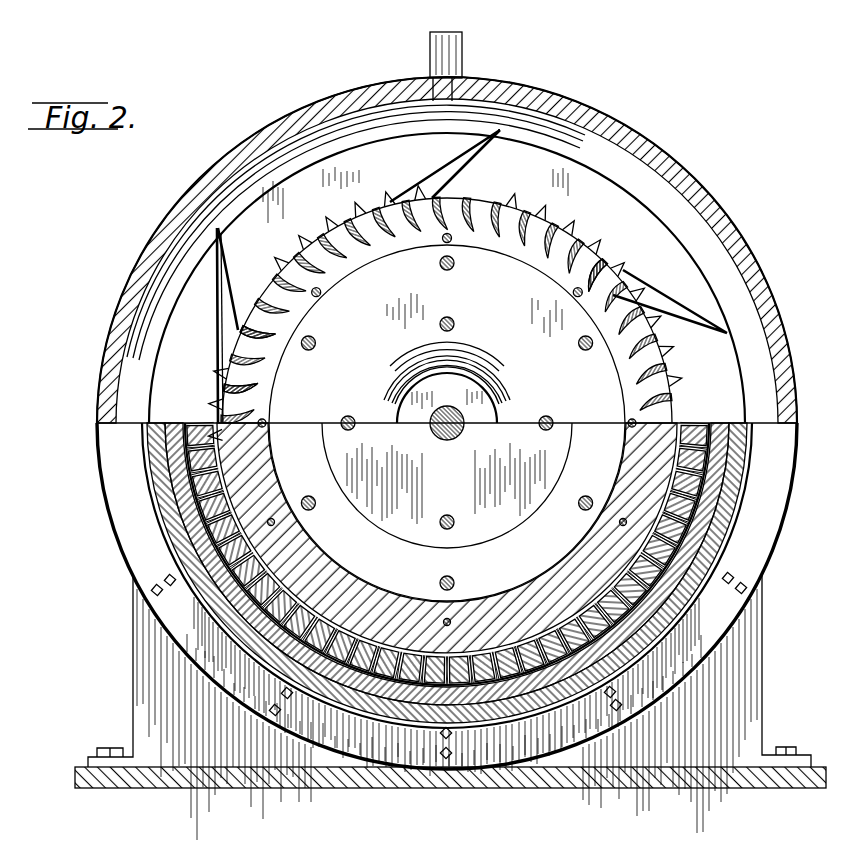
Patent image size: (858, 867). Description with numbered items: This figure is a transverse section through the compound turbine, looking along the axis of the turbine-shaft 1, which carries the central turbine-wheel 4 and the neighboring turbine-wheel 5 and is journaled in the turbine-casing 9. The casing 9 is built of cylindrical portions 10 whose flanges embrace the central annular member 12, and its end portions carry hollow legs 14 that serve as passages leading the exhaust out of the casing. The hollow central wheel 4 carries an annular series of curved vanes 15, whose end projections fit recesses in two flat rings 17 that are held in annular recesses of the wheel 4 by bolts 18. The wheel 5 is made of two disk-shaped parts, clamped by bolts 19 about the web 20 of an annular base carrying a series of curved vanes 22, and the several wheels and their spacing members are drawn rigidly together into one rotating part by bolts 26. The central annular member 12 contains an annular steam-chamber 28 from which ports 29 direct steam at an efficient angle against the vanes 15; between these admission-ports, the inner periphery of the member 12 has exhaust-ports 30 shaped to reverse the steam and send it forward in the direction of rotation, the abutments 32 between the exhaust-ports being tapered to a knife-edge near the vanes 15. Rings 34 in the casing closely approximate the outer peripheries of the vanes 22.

The turbine-shaft 1 is at (430, 428).
The central turbine-wheel 4 is at (447, 374).
The turbine-wheel 5 is at (447, 494).
The turbine-casing 9 is at (447, 227).
The cylindrical portions 10 is at (447, 599).
The central annular member 12 is at (401, 278).
The hollow legs 14 is at (450, 706).
The curved vanes 15 is at (442, 324).
The flat rings 17 is at (447, 423).
The bolts 18 is at (447, 331).
The bolts 19 is at (447, 567).
The web 20 is at (447, 538).
The curved vanes 22 is at (447, 553).
The bolts 26 is at (446, 423).
The annular steam-chamber 28 is at (346, 232).
The ports 29 is at (472, 276).
The exhaust-ports 30 is at (420, 260).
The abutments 32 is at (628, 204).
The rings 34 is at (447, 579).